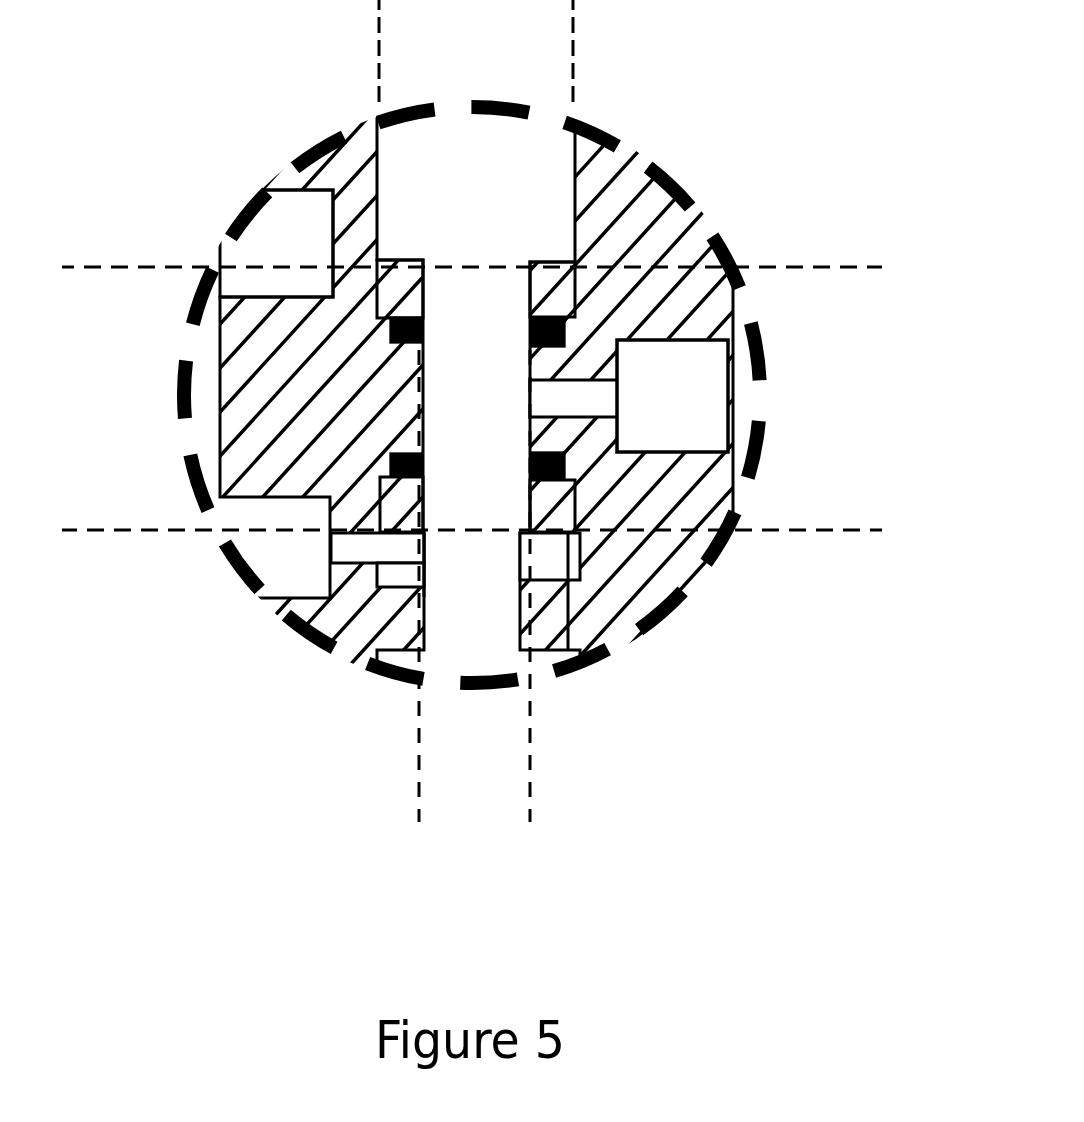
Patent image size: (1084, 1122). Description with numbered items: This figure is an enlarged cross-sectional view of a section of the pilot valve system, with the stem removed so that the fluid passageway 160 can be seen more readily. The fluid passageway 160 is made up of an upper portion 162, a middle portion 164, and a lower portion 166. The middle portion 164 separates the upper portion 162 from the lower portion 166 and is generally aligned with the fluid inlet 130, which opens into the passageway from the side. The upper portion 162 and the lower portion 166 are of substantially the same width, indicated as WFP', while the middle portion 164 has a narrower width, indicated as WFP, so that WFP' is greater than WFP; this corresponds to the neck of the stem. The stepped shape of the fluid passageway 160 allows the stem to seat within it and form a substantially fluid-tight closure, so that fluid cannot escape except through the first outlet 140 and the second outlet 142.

The fluid inlet 130 is at (678, 400).
The first outlet 140 is at (288, 558).
The second outlet 142 is at (292, 243).
The fluid passageway 160 is at (517, 212).
The upper portion 162 is at (453, 190).
The middle portion 164 is at (473, 370).
The lower portion 166 is at (473, 577).